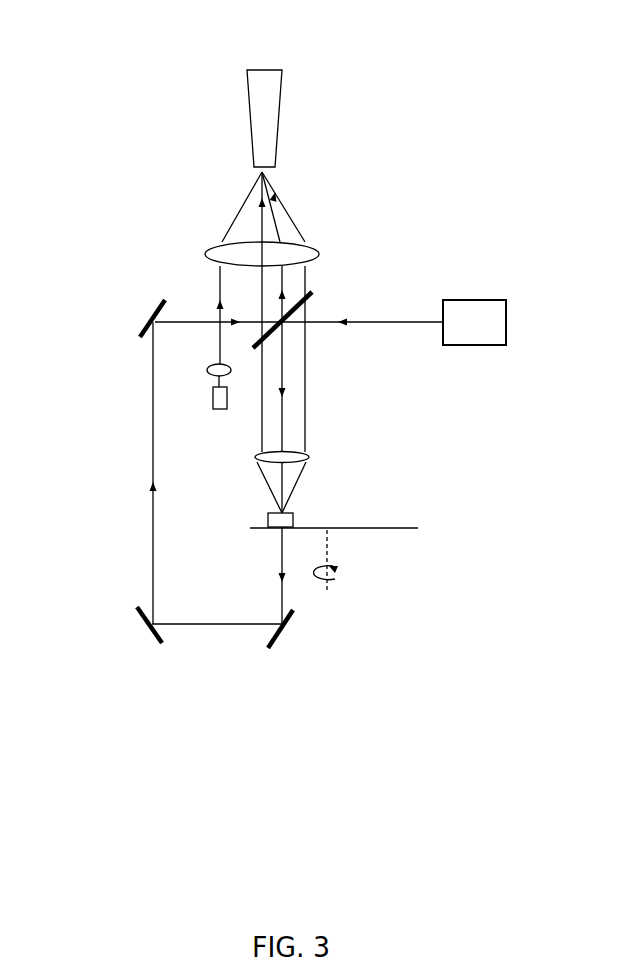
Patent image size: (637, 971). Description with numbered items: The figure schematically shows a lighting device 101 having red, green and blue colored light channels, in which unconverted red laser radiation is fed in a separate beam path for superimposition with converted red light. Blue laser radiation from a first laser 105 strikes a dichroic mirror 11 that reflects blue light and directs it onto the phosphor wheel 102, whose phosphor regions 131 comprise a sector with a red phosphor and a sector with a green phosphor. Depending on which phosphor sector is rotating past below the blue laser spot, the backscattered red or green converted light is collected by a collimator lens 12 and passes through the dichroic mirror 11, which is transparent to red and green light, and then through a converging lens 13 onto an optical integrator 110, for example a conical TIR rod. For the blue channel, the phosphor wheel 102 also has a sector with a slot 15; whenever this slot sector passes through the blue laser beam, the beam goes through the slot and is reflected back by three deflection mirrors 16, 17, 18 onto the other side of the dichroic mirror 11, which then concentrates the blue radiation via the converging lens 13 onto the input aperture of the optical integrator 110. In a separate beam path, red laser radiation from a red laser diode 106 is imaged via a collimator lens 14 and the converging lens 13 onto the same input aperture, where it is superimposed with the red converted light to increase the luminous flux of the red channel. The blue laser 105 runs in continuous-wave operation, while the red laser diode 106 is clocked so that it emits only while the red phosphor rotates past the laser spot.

The lighting device 101 is at (343, 57).
The optical integrator 110 is at (272, 128).
The converging lens 13 is at (308, 243).
The dichroic mirror 11 is at (305, 303).
The deflection mirror 18 is at (158, 302).
The collimator lens 14 is at (207, 370).
The red laser diode 106 is at (213, 398).
The first laser 105 is at (481, 305).
The collimator lens 12 is at (302, 453).
The phosphor regions 131 is at (290, 515).
The slot 15 is at (353, 494).
The phosphor wheel 102 is at (358, 532).
The deflection mirror 17 is at (152, 637).
The deflection mirror 16 is at (285, 630).